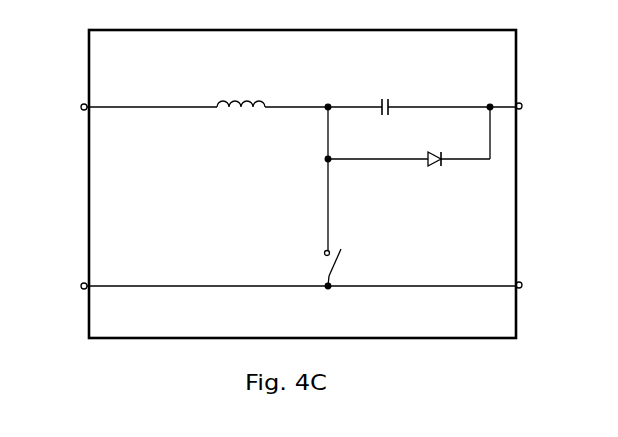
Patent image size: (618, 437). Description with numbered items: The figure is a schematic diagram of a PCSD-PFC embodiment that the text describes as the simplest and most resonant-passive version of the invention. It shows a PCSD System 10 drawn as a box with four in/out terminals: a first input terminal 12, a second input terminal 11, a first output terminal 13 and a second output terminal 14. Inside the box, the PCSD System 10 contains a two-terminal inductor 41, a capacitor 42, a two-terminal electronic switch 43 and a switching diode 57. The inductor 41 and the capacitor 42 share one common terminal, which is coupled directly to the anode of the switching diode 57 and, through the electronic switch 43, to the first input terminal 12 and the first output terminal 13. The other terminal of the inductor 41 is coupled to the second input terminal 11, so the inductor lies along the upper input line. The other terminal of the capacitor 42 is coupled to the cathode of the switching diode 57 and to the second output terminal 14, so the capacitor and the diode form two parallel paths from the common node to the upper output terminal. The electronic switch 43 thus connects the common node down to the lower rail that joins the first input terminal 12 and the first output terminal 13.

The PCSD System 10 is at (96, 22).
The second input terminal Vin1 11 is at (80, 127).
The first input terminal Vin0 12 is at (80, 307).
The first output terminal Vout0 13 is at (527, 303).
The second output terminal Vout1 14 is at (538, 123).
The two-terminal inductor L1 41 is at (282, 95).
The capacitor C1 42 is at (394, 95).
The two-terminal electronic switch SW1 43 is at (313, 252).
The switching diode D1 57 is at (451, 177).